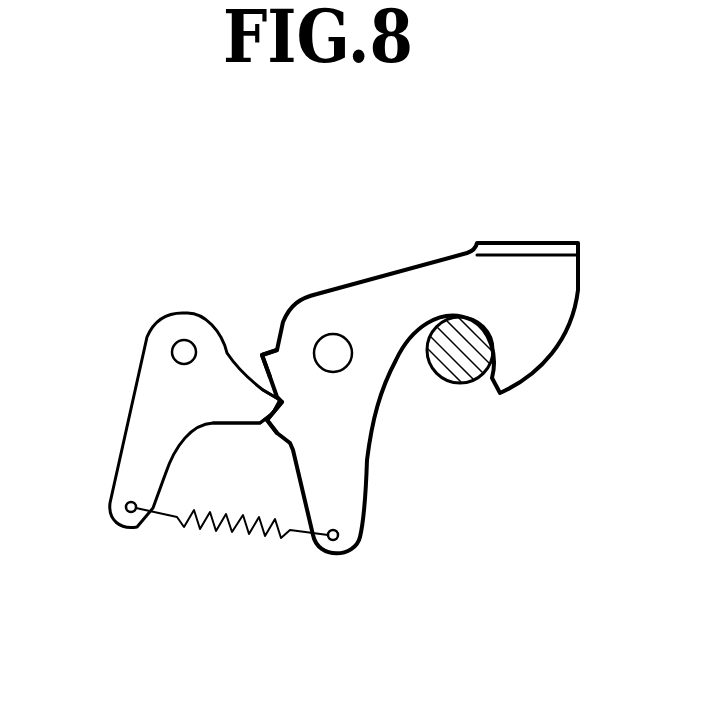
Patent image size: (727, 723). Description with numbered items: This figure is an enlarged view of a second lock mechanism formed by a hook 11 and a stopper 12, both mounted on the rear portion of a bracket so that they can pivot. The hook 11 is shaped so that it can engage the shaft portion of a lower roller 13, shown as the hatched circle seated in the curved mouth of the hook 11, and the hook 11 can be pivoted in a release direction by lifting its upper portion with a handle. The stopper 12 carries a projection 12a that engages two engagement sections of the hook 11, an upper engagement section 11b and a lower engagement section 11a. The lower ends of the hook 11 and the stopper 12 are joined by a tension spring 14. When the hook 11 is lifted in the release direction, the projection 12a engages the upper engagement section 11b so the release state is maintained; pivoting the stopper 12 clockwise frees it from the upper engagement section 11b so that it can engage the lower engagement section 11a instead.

The hook 11 is at (405, 285).
The lower engagement section 11a is at (257, 418).
The upper engagement section 11b is at (270, 353).
The stopper 12 is at (147, 383).
The projection 12a is at (247, 410).
The lower roller 13 is at (450, 377).
The tension spring 14 is at (233, 532).